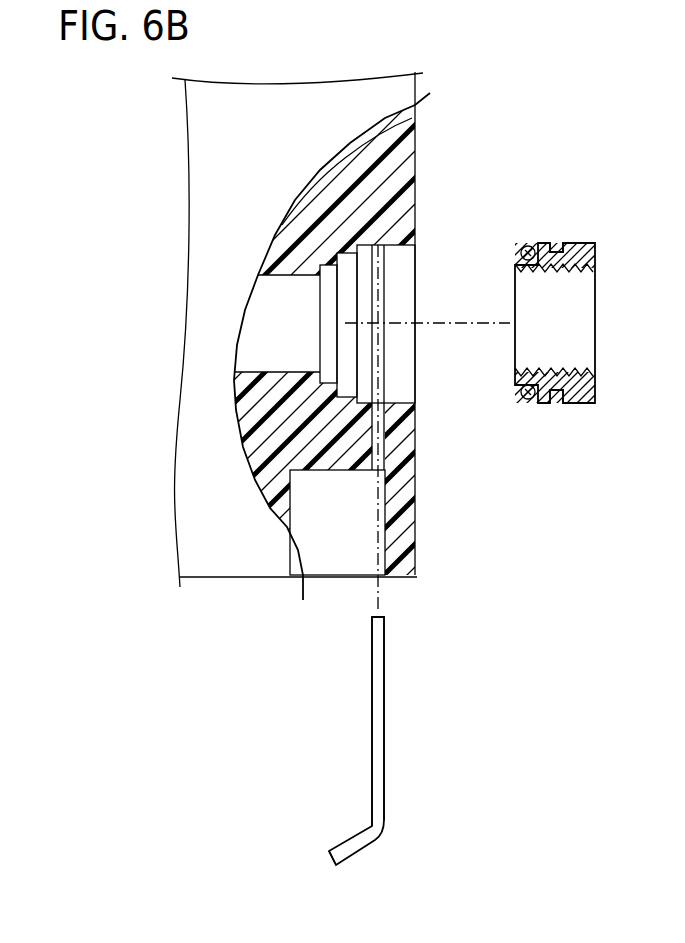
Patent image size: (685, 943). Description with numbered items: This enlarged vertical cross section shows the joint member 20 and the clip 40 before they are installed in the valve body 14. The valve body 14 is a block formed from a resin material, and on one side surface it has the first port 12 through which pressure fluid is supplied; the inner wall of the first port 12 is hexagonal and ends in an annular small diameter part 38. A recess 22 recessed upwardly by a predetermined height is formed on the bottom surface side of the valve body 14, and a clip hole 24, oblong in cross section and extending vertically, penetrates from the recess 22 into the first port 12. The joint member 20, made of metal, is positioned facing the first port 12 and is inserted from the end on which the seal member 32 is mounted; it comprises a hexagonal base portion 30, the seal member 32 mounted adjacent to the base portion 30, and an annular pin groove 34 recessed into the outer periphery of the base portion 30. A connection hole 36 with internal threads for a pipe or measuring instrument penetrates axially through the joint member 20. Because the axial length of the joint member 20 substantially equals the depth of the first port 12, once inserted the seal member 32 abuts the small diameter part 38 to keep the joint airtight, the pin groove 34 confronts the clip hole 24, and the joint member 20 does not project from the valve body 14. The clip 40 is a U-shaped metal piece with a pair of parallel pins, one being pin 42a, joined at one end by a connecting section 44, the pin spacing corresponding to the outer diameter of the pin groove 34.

The first port 12 is at (407, 397).
The valve body 14 is at (190, 513).
The joint member 20 is at (600, 253).
The recess 22 is at (335, 548).
The clip hole 24 is at (377, 267).
The base portion 30 is at (586, 242).
The seal member 32 is at (532, 398).
The pin groove 34 is at (555, 392).
The connection hole 36 is at (582, 370).
The small diameter part 38 is at (352, 258).
The clip 40 is at (375, 752).
The pin 42a is at (377, 728).
The connecting section 44 is at (337, 858).